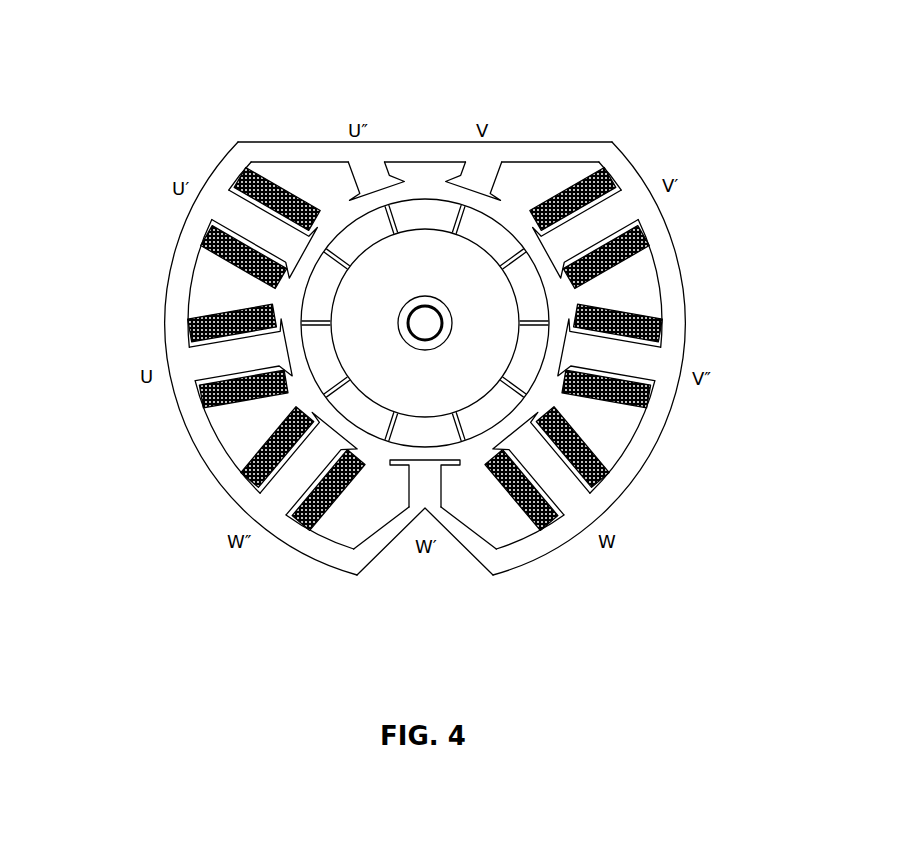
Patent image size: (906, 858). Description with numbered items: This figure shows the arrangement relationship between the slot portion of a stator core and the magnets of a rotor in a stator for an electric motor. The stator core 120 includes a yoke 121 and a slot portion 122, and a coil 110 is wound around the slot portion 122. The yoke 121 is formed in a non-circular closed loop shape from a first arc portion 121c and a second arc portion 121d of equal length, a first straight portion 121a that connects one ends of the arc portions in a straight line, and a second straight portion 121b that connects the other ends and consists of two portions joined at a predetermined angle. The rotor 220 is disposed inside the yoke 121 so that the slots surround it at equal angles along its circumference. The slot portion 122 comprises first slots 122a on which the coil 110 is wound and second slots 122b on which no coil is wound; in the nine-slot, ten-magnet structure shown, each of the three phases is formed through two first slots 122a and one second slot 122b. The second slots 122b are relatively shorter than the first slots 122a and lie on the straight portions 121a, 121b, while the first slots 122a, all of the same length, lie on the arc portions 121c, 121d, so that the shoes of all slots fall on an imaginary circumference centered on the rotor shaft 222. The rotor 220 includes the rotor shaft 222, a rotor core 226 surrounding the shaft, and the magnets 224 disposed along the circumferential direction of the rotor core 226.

The coil 110 is at (657, 302).
The stator core 120 is at (690, 338).
The yoke 121 is at (394, 373).
The first straight portion 121a is at (503, 140).
The second straight portion 121b is at (466, 548).
The first arc portion 121c is at (176, 290).
The second arc portion 121d is at (652, 462).
The slot portion 122 is at (292, 37).
The first slots 122a is at (232, 213).
The second slots 122b is at (360, 178).
The rotor 220 is at (293, 298).
The rotor shaft 222 is at (440, 304).
The magnets 224 is at (477, 222).
The rotor core 226 is at (490, 302).